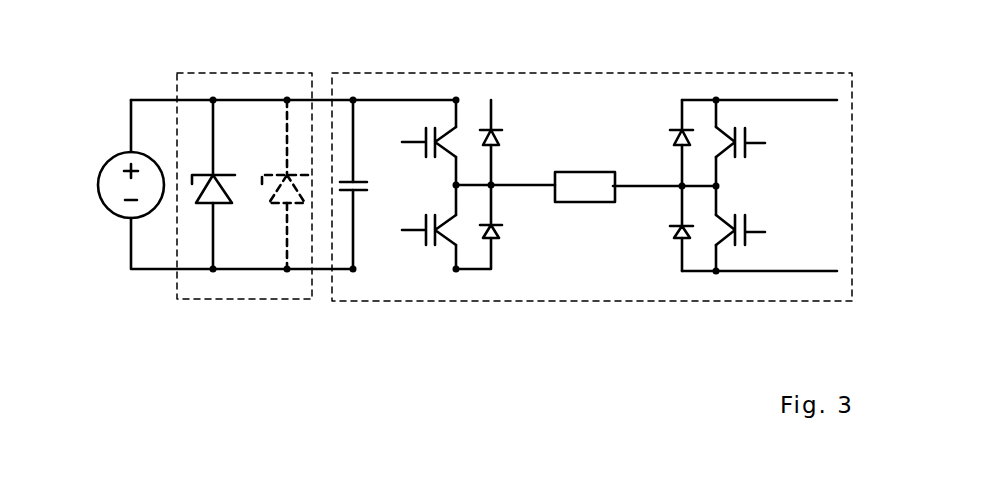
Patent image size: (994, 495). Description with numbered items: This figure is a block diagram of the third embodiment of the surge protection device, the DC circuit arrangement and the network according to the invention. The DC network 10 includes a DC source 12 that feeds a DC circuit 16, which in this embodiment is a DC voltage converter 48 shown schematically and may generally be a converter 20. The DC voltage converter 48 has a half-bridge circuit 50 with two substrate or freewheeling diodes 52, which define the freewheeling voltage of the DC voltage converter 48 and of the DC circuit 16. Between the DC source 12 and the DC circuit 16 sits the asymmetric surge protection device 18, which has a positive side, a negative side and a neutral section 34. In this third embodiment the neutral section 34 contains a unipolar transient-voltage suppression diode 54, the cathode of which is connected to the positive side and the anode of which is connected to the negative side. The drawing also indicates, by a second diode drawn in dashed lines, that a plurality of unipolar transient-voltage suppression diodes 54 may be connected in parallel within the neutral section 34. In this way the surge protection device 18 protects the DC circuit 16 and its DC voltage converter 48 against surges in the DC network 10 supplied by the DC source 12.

The DC network 10 is at (113, 303).
The DC source 12 is at (99, 160).
The neutral section 34 is at (205, 110).
The asymmetric surge protection device 18 is at (299, 72).
The unipolar transient-voltage suppression diode 54 is at (201, 204).
The half-bridge circuit 50 is at (458, 92).
The freewheeling diodes 52 is at (492, 247).
The DC circuit 16 is at (592, 151).
The converter 20 is at (592, 151).
The DC voltage converter 48 is at (757, 29).